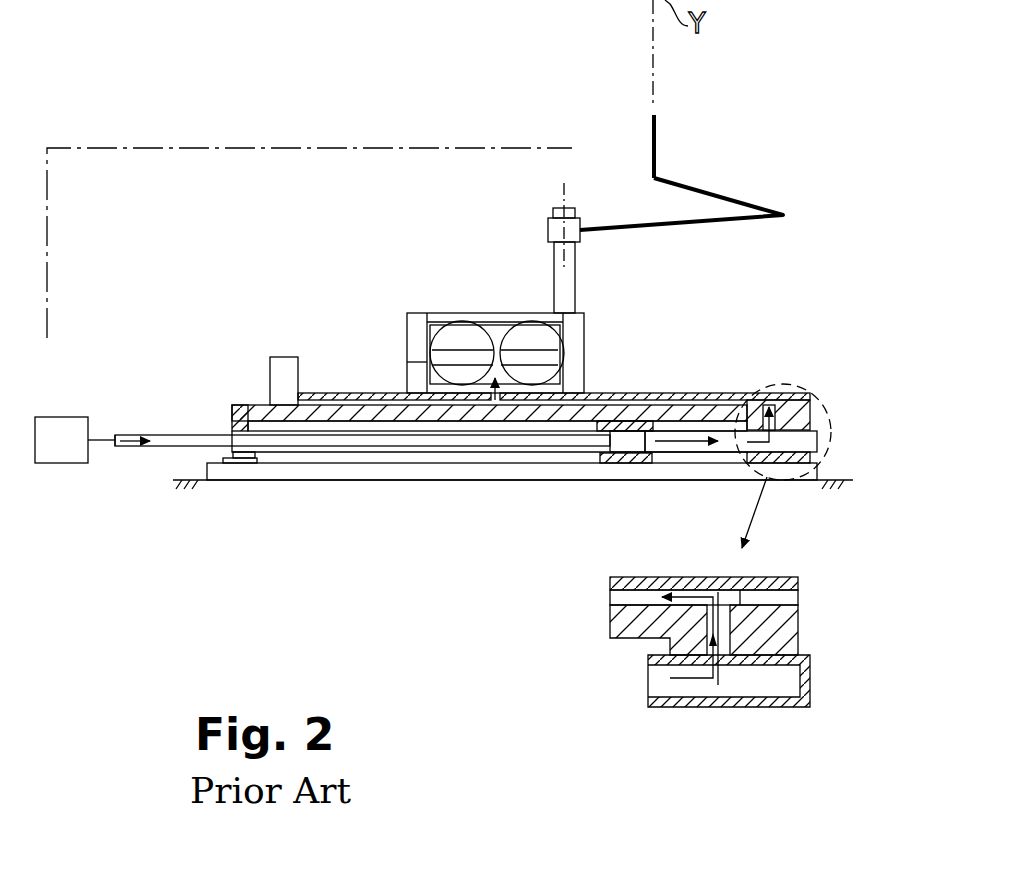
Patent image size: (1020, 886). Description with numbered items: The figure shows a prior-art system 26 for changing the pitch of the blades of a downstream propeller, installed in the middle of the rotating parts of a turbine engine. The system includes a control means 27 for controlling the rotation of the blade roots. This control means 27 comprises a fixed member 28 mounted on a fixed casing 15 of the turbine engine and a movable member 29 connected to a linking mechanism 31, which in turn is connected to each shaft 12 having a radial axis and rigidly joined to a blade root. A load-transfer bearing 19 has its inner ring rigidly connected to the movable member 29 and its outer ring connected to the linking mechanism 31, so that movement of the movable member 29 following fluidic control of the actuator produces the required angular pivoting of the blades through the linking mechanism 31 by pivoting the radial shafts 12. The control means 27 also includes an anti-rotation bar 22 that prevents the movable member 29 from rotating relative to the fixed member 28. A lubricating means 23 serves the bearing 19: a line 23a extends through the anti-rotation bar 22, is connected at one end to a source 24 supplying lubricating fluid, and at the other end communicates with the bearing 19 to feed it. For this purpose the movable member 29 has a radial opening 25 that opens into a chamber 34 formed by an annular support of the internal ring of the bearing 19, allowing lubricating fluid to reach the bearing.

The shaft 12 is at (655, 132).
The fixed casing 15 is at (183, 482).
The load-transfer bearing 19 is at (438, 308).
The anti-rotation bar 22 is at (548, 463).
The lubricating means 23 is at (170, 428).
The line 23a is at (140, 448).
The source for supplying lubricating fluid 24 is at (76, 456).
The radial opening 25 is at (728, 622).
The pitch change system 26 is at (268, 138).
The control means 27 is at (250, 397).
The fixed member 28 is at (300, 481).
The movable member 29 is at (352, 413).
The linking mechanism 31 is at (748, 192).
The chamber 34 is at (725, 400).